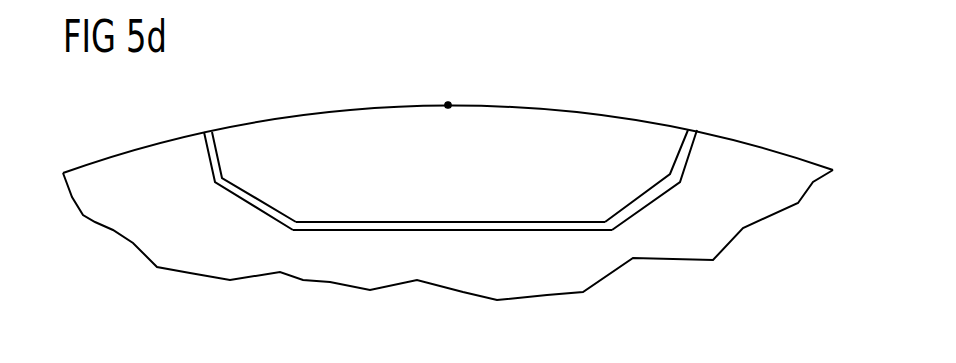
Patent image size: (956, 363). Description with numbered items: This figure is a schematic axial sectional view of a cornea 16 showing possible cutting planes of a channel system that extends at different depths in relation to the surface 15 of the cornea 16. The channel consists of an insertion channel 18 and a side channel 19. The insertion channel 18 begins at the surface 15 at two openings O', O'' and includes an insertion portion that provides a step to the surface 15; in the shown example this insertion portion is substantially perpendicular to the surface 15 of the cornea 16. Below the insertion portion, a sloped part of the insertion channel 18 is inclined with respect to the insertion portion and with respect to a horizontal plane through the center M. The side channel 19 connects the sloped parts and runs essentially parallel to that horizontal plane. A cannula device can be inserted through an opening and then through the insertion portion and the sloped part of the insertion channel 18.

The surface of the cornea 15 is at (541, 107).
The cornea 16 is at (282, 114).
The insertion channel 18 is at (233, 200).
The side channel 19 is at (440, 221).
The center M is at (448, 101).
The opening O' is at (205, 103).
The opening O'' is at (691, 98).